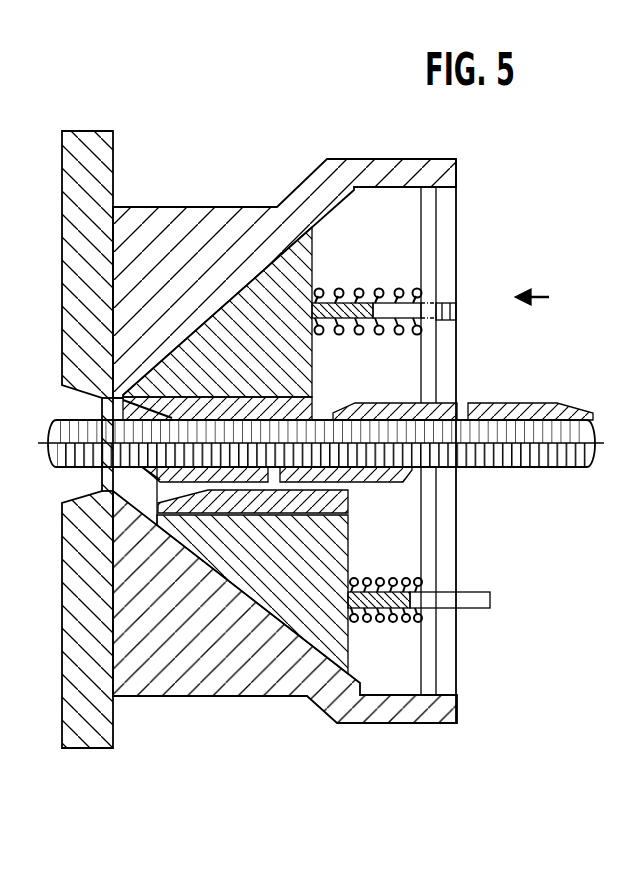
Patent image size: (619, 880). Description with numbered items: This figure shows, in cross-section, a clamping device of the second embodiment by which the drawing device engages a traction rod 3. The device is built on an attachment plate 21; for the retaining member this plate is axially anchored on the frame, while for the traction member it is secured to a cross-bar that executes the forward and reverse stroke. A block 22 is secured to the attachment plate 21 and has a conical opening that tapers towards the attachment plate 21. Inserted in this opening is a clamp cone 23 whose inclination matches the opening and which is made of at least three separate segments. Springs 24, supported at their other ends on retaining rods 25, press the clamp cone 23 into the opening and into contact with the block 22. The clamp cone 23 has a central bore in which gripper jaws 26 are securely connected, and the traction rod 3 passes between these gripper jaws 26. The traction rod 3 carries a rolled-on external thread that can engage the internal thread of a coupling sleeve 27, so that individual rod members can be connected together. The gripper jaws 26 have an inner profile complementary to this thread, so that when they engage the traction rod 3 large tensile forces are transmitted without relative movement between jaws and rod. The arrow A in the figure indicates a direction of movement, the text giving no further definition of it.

The traction rod 3 is at (572, 458).
The attachment plate 21 is at (84, 158).
The block 22 is at (234, 225).
The clamp cone 23 is at (297, 603).
The springs 24 is at (384, 340).
The retaining rods 25 is at (430, 212).
The gripper jaws 26 is at (332, 502).
The coupling sleeve 27 is at (523, 403).
The direction arrow A is at (544, 281).